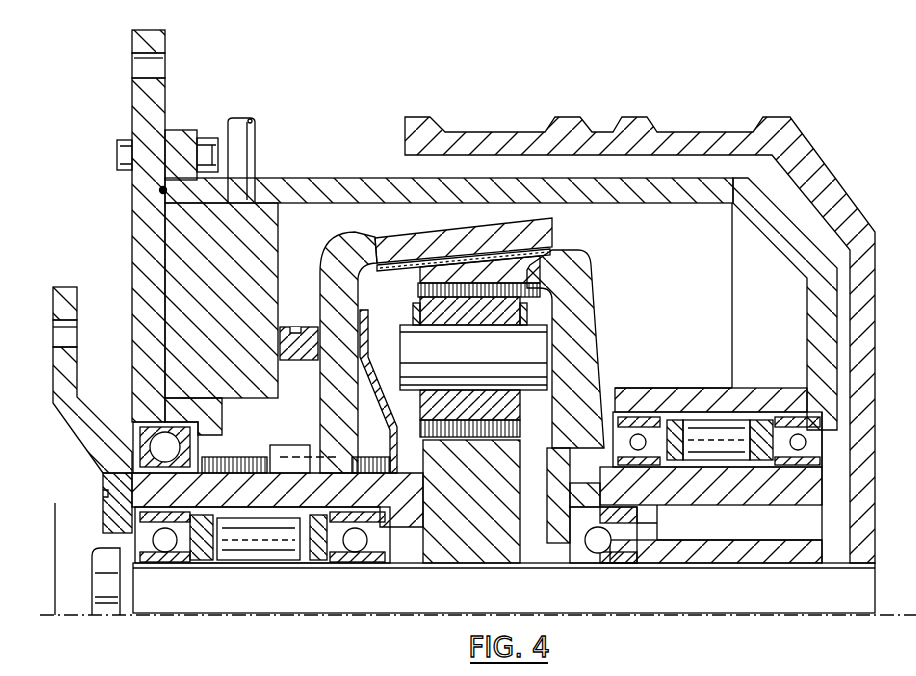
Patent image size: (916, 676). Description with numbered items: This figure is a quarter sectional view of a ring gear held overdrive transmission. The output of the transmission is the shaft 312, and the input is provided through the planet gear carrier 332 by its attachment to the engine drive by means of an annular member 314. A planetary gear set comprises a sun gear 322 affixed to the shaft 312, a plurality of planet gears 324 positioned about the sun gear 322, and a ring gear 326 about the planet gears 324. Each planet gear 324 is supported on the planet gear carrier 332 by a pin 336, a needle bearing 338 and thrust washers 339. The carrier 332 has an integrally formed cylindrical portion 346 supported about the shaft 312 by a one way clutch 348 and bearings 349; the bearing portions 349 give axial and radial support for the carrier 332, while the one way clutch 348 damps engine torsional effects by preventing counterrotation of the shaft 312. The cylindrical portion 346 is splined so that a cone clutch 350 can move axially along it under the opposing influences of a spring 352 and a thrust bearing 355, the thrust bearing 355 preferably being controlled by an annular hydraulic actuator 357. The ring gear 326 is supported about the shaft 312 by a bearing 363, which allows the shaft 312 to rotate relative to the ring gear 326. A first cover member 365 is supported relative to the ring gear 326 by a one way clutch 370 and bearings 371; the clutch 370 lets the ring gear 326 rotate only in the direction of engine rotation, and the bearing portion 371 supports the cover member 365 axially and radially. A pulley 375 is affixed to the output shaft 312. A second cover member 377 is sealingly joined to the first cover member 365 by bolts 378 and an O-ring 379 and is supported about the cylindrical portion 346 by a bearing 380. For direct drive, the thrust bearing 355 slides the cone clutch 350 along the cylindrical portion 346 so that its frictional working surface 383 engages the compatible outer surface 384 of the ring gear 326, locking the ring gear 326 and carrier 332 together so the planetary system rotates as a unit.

The shaft 312 is at (212, 595).
The annular member 314 is at (105, 467).
The sun gear 322 is at (497, 542).
The planet gears 324 is at (443, 310).
The ring gear 326 is at (650, 487).
The planet gear carrier 332 is at (408, 455).
The pin 336 is at (477, 362).
The needle bearing 338 is at (510, 303).
The thrust washers 339 is at (553, 412).
The cylindrical portion 346 is at (325, 493).
The one way clutch 348 is at (258, 548).
The bearings 349 is at (162, 550).
The cone clutch 350 is at (380, 243).
The spring 352 is at (307, 418).
The thrust bearing 355 is at (297, 330).
The annular hydraulic actuator 357 is at (183, 268).
The bearing 363 is at (602, 555).
The first cover member 365 is at (773, 223).
The one way clutch 370 is at (727, 452).
The bearings 371 is at (820, 442).
The pulley 375 is at (840, 207).
The second cover member 377 is at (140, 102).
The bolts 378 is at (117, 162).
The O-ring 379 is at (160, 192).
The bearing 380 is at (100, 452).
The frictional working surface 383 is at (545, 248).
The outer surface 384 is at (540, 263).